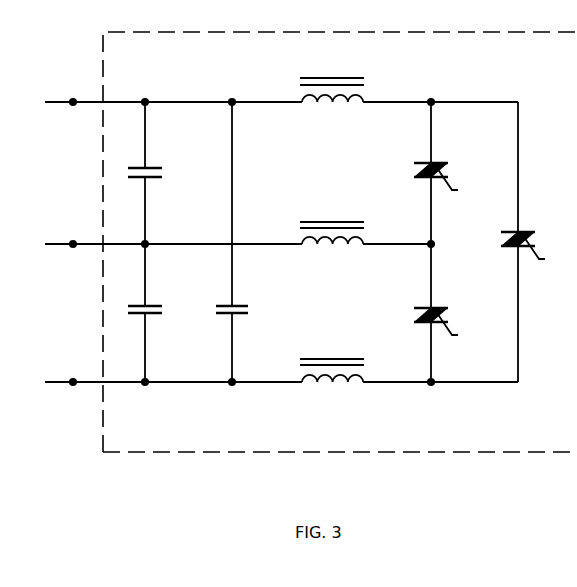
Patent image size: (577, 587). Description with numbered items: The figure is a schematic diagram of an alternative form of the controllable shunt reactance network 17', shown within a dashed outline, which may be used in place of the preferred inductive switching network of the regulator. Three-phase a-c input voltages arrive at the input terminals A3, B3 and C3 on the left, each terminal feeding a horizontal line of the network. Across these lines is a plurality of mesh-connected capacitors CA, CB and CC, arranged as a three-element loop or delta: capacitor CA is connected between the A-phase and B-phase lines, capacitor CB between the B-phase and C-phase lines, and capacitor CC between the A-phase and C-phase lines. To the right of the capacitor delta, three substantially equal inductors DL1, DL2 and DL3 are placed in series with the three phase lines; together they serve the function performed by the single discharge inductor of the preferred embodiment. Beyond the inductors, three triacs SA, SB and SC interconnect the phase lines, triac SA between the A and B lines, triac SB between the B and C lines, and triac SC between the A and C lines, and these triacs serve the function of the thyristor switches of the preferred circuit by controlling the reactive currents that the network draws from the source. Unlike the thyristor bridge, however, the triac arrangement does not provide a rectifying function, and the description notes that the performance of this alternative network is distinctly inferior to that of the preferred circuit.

The shunt reactance network 17' is at (340, 258).
The input terminal A3 is at (73, 100).
The input terminal B3 is at (73, 242).
The input terminal C3 is at (73, 380).
The capacitor CA is at (152, 167).
The capacitor CB is at (152, 305).
The capacitor CC is at (238, 305).
The inductor DL1 is at (330, 103).
The inductor DL2 is at (337, 246).
The inductor DL3 is at (330, 383).
The triac SA is at (445, 163).
The triac SB is at (445, 308).
The triac SC is at (524, 231).